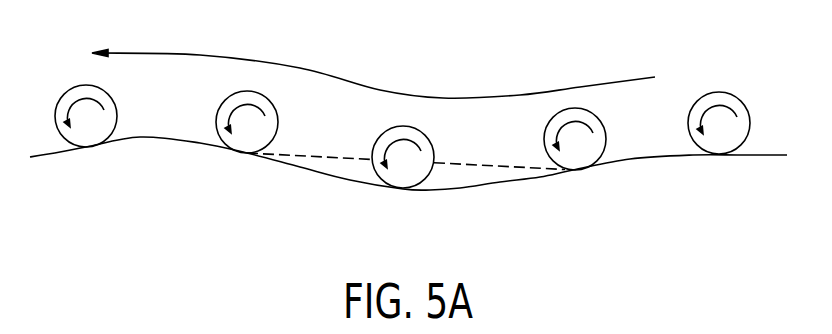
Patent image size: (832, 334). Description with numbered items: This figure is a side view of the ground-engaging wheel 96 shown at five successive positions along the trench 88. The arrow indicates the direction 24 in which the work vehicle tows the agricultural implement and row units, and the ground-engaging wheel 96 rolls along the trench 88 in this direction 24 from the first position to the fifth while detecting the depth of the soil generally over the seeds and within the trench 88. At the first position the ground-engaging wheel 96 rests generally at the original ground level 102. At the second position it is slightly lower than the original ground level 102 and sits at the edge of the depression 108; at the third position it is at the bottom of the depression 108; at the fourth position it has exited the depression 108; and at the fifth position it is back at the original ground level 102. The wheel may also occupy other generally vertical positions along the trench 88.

The direction 24 is at (378, 90).
The ground-engaging wheel 96 is at (80, 132).
The original ground level 102 is at (773, 155).
The depression 108 is at (462, 180).
The trench 88 is at (757, 218).